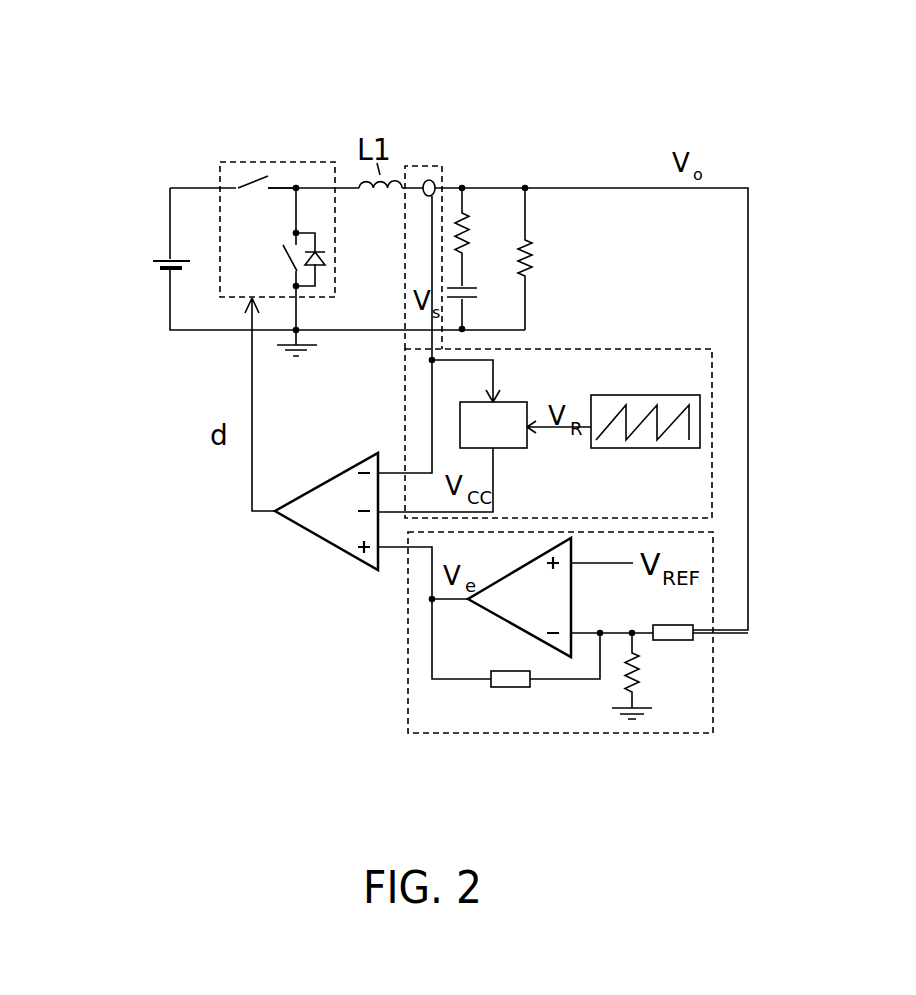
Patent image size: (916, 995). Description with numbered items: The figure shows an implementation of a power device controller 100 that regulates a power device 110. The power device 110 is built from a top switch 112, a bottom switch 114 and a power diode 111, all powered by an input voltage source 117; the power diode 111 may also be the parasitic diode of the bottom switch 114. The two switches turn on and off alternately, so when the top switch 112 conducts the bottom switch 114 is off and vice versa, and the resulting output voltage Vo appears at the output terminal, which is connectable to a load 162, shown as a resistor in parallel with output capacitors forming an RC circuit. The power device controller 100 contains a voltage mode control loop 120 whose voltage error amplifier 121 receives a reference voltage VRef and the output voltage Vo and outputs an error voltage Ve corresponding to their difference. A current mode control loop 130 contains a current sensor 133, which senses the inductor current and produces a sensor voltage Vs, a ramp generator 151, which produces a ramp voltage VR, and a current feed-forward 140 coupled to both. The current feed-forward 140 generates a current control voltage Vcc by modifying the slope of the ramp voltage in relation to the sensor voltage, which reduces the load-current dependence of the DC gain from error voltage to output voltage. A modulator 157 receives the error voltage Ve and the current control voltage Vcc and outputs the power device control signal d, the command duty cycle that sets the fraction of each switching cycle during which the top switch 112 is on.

The power device controller 100 is at (813, 140).
The power device 110 is at (292, 161).
The power diode 111 is at (325, 257).
The top switch 112 is at (238, 182).
The bottom switch 114 is at (288, 268).
The input voltage source 117 is at (158, 280).
The voltage mode control loop 120 is at (715, 668).
The voltage error amplifier 121 is at (520, 619).
The current mode control loop 130 is at (715, 472).
The current sensor 133 is at (428, 178).
The current feed-forward 140 is at (471, 442).
The ramp generator 151 is at (640, 452).
The modulator 157 is at (322, 549).
The load 162 is at (540, 245).